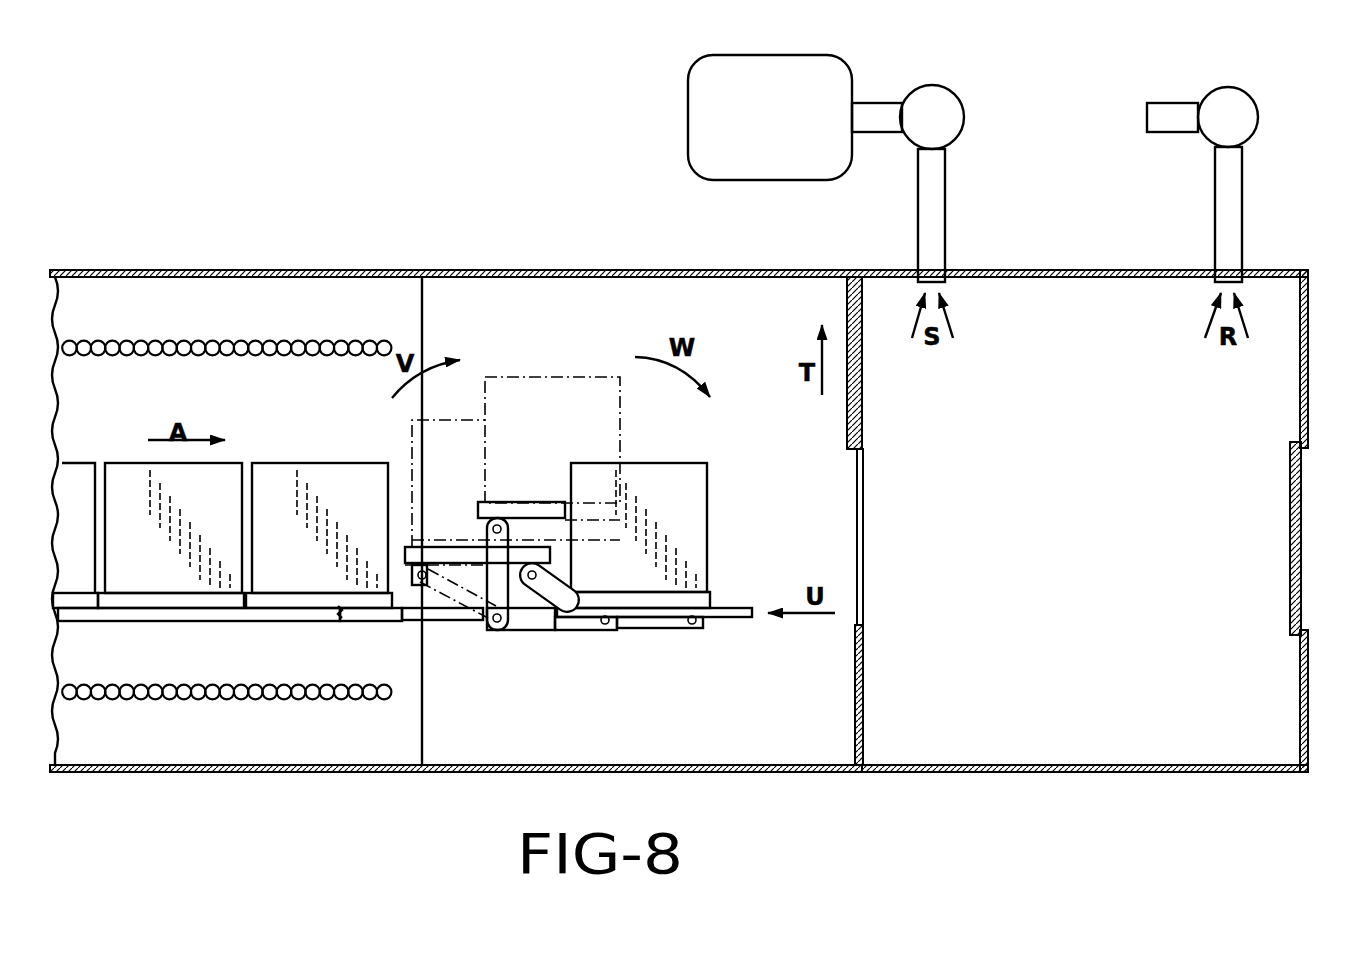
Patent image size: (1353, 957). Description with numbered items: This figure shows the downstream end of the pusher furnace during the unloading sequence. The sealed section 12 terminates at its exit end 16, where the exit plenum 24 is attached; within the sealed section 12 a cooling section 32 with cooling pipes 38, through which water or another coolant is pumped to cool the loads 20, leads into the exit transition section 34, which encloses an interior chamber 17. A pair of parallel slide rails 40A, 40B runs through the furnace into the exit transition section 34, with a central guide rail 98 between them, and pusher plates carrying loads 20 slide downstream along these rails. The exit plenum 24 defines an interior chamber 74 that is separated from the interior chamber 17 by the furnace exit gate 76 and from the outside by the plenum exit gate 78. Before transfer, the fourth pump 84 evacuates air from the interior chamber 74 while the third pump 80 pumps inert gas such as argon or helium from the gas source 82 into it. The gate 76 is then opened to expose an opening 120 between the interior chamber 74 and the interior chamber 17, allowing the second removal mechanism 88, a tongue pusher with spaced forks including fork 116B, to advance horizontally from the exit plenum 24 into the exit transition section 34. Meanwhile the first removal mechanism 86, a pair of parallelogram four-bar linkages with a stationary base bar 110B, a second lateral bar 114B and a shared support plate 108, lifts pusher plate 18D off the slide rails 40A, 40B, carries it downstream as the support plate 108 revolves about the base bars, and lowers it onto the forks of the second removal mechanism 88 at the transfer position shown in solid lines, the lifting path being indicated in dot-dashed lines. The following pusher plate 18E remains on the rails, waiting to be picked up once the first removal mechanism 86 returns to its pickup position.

The sealed section 12 is at (243, 268).
The cooling section 32 is at (185, 268).
The exit transition section 34 is at (600, 268).
The cooling rings or pipes 38 is at (328, 340).
The interior chamber 17 is at (775, 722).
The second or exit end 16 is at (861, 774).
The exit plenum 24 is at (1081, 776).
The interior chamber 74 is at (1180, 723).
The furnace exit gate or exit plenum entry gate 76 is at (847, 418).
The opening 120 is at (860, 483).
The plenum exit gate 78 is at (1290, 522).
The third pump 80 is at (958, 100).
The gas source 82 is at (688, 117).
The fourth pump 84 is at (1253, 98).
The load 20 is at (358, 480).
The pusher plate 18E is at (287, 596).
The pusher plate 18D is at (609, 596).
The slide rail 40B is at (213, 622).
The central guide rail 98 is at (370, 622).
The slide rail 40A is at (452, 622).
The first removal mechanism 86 is at (520, 633).
The second removal mechanism 88 is at (745, 603).
The stationary base bar 110B is at (572, 632).
The second lateral bar 114B is at (640, 628).
The fork 116B is at (672, 622).
The support plate 108 is at (702, 622).